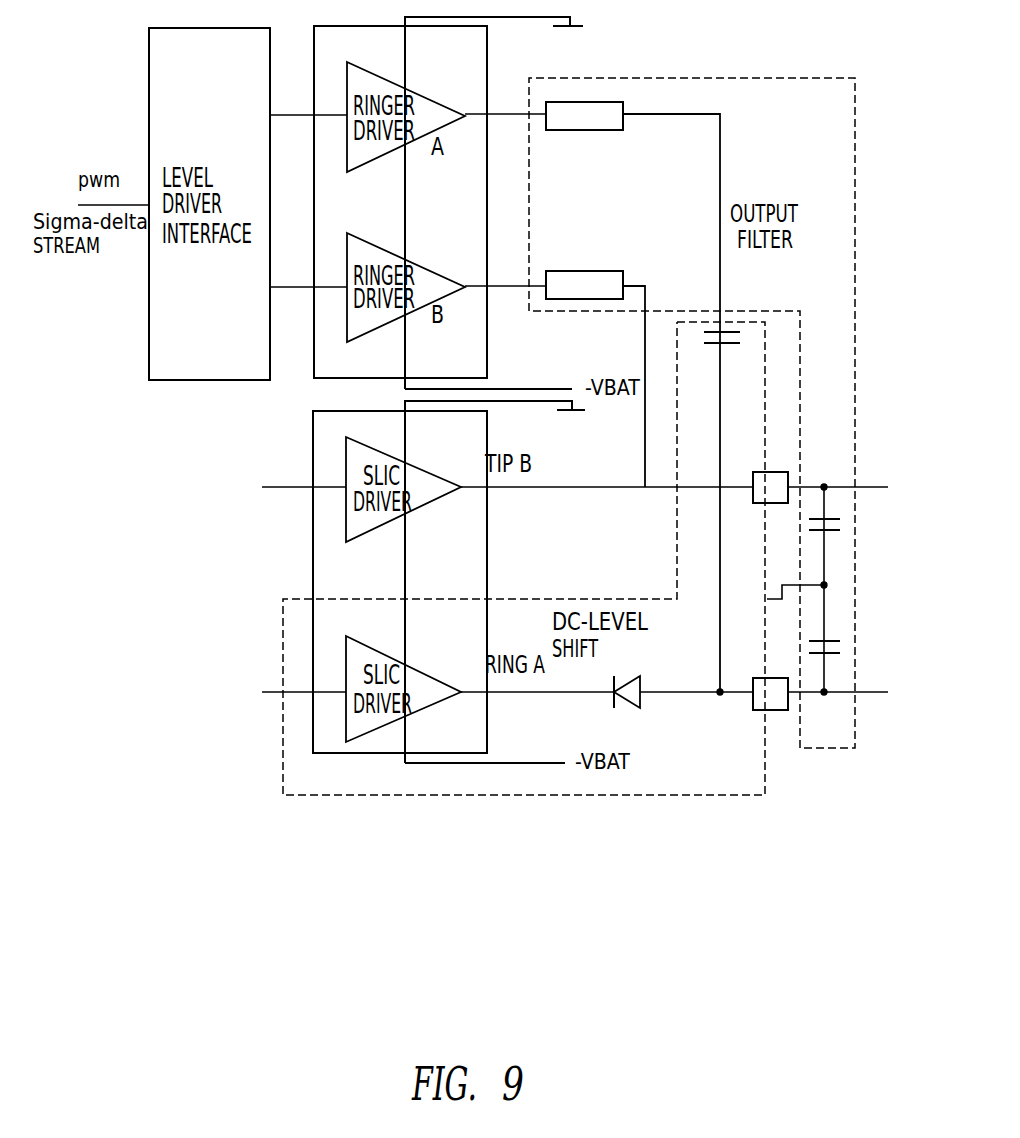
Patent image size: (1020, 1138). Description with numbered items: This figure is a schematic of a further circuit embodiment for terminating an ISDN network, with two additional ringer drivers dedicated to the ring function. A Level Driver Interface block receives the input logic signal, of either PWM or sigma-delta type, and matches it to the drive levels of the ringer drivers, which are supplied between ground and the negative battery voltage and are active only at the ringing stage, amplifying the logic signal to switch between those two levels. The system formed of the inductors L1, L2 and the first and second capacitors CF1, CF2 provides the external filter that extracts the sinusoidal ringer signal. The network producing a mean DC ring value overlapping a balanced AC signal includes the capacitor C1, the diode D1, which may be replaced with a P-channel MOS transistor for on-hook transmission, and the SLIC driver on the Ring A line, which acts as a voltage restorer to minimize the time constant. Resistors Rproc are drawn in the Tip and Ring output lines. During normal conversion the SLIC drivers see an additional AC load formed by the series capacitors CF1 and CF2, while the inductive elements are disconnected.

The inductive filter element L1 is at (584, 132).
The inductive filter element L2 is at (584, 270).
The capacitor C1 is at (732, 338).
The first capacitor CF1 is at (843, 524).
The second capacitor CF2 is at (843, 649).
The diode D1 is at (627, 714).
The protection resistor Rproc is at (765, 570).